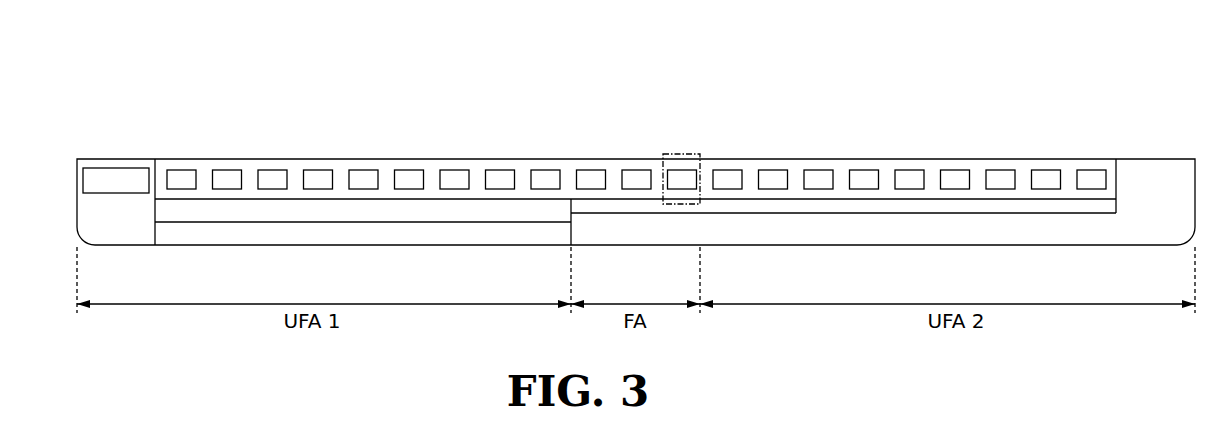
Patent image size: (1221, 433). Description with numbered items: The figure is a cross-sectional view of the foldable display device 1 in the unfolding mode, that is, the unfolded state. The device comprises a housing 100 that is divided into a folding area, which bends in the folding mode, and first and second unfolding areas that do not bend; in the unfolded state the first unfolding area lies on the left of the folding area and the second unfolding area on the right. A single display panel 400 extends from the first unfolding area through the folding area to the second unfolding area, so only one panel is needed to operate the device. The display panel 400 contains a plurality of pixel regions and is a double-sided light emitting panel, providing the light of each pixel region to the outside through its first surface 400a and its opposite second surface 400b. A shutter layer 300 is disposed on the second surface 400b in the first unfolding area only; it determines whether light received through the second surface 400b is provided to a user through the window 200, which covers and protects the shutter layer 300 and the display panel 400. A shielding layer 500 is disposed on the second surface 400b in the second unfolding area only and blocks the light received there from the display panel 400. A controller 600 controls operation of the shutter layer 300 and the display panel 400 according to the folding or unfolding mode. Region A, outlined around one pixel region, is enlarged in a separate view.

The foldable display device 1 is at (635, 52).
The housing 100 is at (120, 240).
The window 200 is at (352, 240).
The shutter layer 300 is at (280, 214).
The display panel 400 is at (248, 168).
The first surface 400a is at (343, 159).
The second surface 400b is at (454, 199).
The shielding layer 500 is at (977, 205).
The controller 600 is at (113, 167).
The region A is at (680, 154).